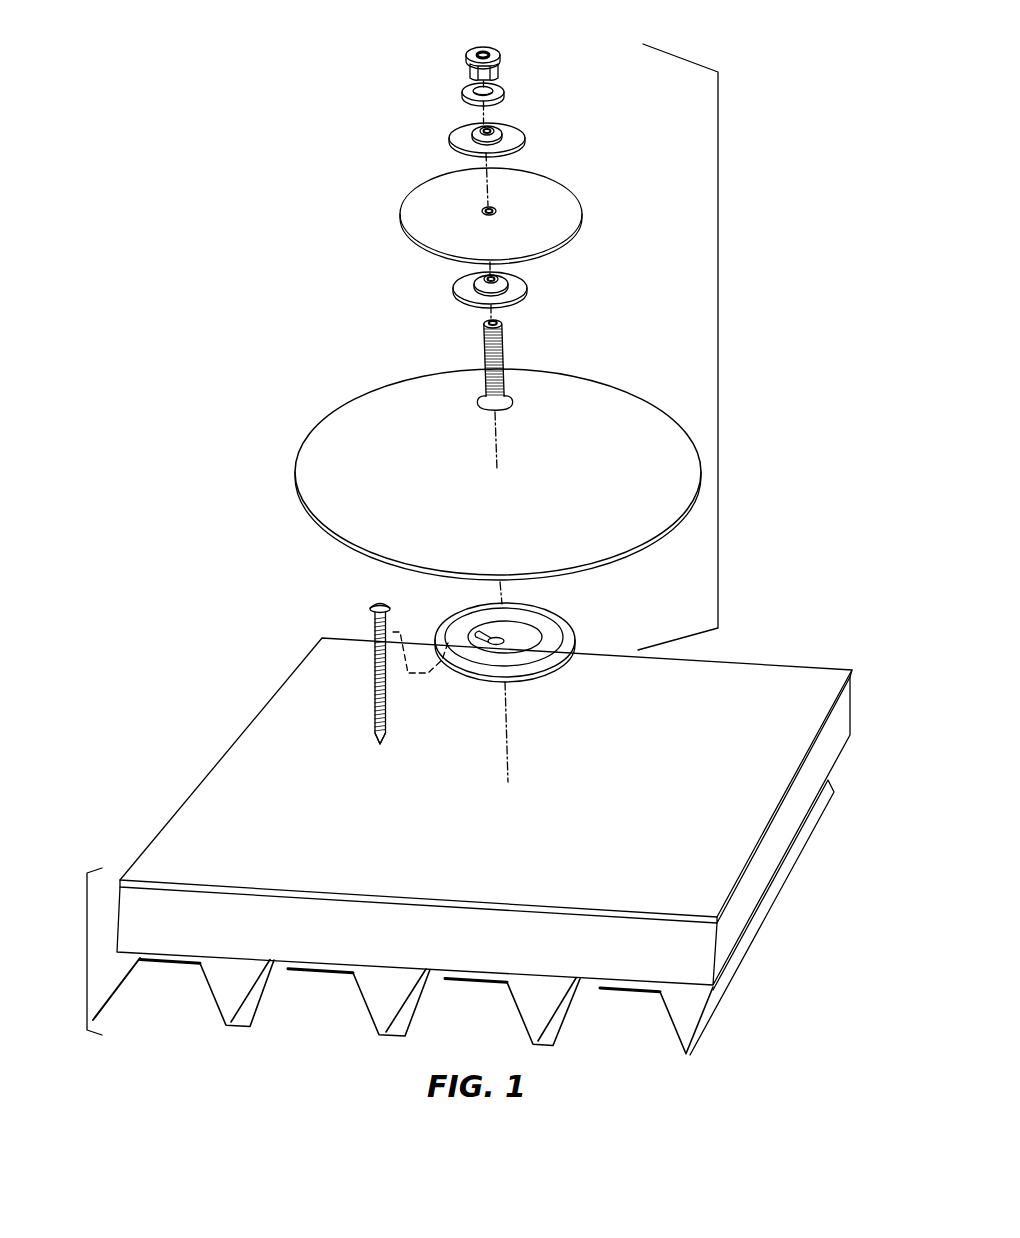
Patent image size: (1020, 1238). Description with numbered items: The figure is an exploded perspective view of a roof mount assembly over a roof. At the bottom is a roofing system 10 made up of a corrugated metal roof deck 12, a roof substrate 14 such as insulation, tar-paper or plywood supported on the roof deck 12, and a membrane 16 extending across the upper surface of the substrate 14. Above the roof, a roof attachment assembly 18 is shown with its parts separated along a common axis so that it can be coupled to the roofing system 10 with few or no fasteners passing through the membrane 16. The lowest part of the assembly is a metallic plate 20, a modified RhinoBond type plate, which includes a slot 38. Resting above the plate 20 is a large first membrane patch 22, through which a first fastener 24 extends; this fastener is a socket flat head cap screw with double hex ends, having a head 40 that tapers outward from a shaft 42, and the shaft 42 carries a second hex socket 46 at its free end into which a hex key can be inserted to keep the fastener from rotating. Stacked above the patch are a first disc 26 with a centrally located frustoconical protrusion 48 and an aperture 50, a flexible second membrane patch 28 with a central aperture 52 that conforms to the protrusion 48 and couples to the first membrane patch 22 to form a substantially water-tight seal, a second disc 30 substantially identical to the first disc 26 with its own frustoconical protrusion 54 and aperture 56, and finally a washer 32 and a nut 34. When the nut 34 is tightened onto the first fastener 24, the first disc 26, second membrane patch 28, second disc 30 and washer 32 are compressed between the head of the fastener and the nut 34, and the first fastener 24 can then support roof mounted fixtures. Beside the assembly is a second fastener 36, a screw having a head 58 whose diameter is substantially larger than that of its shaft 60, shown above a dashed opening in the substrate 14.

The roofing system 10 is at (87, 947).
The metal roof deck 12 is at (568, 1008).
The roof substrate 14 is at (730, 923).
The membrane 16 is at (788, 672).
The roof attachment assembly 18 is at (720, 337).
The plate 20 is at (520, 632).
The first membrane patch 22 is at (622, 408).
The first fastener 24 is at (522, 355).
The first disc 26 is at (500, 274).
The second membrane patch 28 is at (521, 201).
The second disc 30 is at (506, 121).
The washer 32 is at (475, 83).
The nut 34 is at (494, 55).
The second fastener 36 is at (337, 660).
The slot 38 is at (480, 632).
The head 40 is at (518, 404).
The shaft 42 is at (503, 328).
The second hex socket 46 is at (485, 323).
The frustoconical protrusion 48 is at (500, 278).
The aperture 50 is at (485, 274).
The aperture 52 is at (490, 205).
The frustoconical protrusion 54 is at (500, 127).
The aperture 56 is at (477, 128).
The head 58 is at (377, 606).
The shaft 60 is at (380, 712).